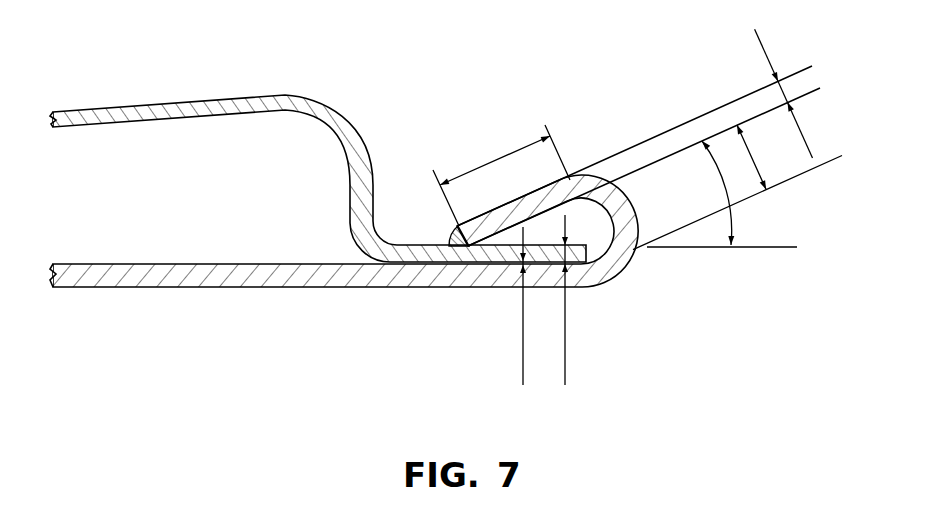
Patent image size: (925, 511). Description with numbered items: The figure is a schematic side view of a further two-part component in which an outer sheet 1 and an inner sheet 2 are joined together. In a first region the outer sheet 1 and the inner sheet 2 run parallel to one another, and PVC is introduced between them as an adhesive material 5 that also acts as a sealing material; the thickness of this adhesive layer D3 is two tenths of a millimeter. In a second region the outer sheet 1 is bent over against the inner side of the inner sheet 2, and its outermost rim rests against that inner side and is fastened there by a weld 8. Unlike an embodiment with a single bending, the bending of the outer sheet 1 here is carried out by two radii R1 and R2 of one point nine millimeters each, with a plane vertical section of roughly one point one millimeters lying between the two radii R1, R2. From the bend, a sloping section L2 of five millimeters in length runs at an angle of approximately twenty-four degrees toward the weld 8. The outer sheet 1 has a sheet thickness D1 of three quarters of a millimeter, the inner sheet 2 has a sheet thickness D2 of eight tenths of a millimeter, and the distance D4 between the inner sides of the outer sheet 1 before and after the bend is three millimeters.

The outer sheet 1 is at (307, 289).
The inner sheet 2 is at (273, 92).
The adhesive material 5 is at (443, 267).
The weld 8 is at (447, 240).
The sheet thickness of the outer sheet D1 is at (784, 92).
The sheet thickness of the inner sheet D2 is at (579, 300).
The thickness of the adhesive material layer D3 is at (510, 306).
The distance between the inner sides of the outer sheet before and after the bend D4 is at (737, 187).
The sloping section L2 is at (501, 175).
The first bending radius R1 is at (622, 187).
The second bending radius R2 is at (622, 272).